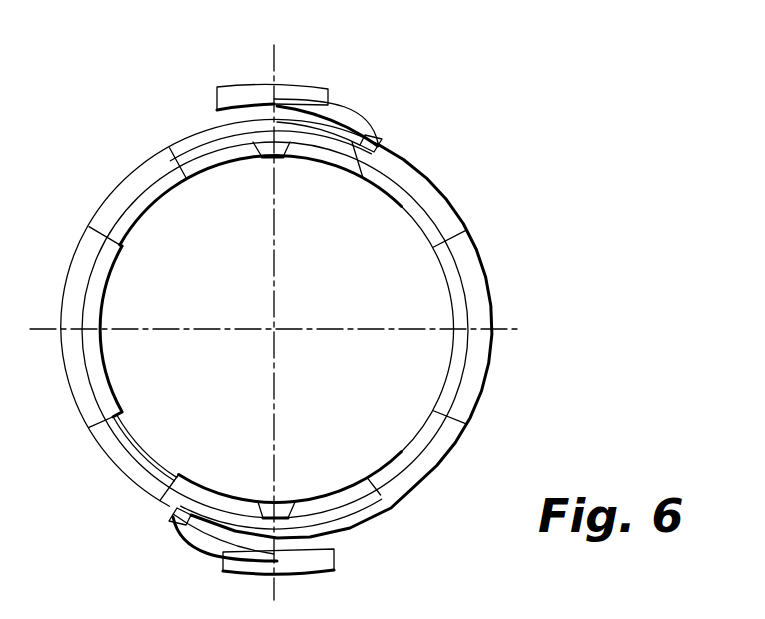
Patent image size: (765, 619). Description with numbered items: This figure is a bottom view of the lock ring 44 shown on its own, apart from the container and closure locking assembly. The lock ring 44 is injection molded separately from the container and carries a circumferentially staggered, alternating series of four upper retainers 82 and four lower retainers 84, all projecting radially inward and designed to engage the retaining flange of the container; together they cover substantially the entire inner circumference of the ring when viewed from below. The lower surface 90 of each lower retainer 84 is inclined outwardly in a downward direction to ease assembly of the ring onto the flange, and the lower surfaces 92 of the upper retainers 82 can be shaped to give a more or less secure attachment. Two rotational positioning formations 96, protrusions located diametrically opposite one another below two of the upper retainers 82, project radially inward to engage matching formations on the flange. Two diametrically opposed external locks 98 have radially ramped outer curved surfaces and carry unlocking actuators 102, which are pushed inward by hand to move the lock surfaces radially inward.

The lock ring 44 is at (453, 154).
The upper retainers 82 is at (115, 262).
The lower retainers 84 is at (147, 200).
The lower surface of the lower retainers 90 is at (152, 192).
The lower surfaces of the upper retainers 92 is at (100, 308).
The rotational positioning formations 96 is at (280, 159).
The external locks 98 is at (354, 112).
The unlocking actuators 102 is at (283, 82).